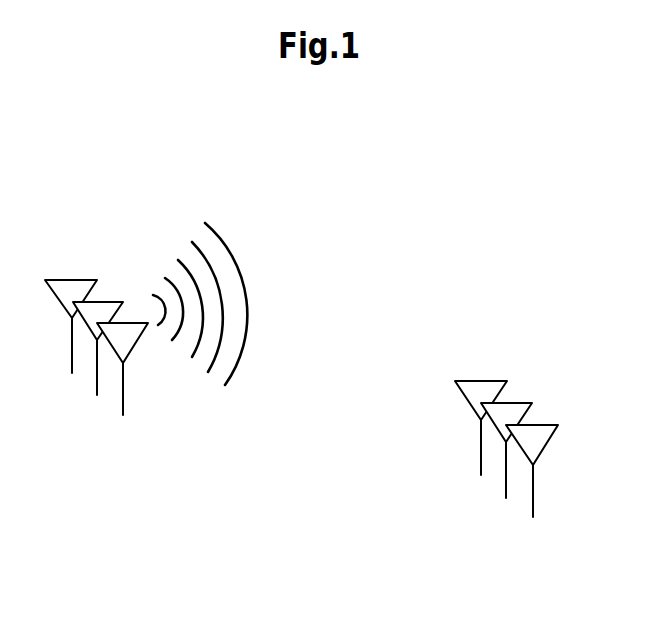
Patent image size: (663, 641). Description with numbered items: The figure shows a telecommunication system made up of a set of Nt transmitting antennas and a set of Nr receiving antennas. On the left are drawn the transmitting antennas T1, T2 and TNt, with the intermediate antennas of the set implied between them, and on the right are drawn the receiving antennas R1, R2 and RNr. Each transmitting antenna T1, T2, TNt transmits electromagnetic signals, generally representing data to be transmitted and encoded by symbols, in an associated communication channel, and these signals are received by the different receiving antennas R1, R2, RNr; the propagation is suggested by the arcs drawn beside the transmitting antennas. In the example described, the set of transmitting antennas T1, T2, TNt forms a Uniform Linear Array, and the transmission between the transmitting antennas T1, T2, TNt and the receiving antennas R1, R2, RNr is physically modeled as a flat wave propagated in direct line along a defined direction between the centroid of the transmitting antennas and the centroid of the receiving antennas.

The transmitting antenna T1 is at (72, 280).
The transmitting antenna T2 is at (108, 302).
The transmitting antenna TNt is at (133, 343).
The receiving antenna R1 is at (472, 381).
The receiving antenna R2 is at (518, 403).
The receiving antenna RNr is at (545, 425).